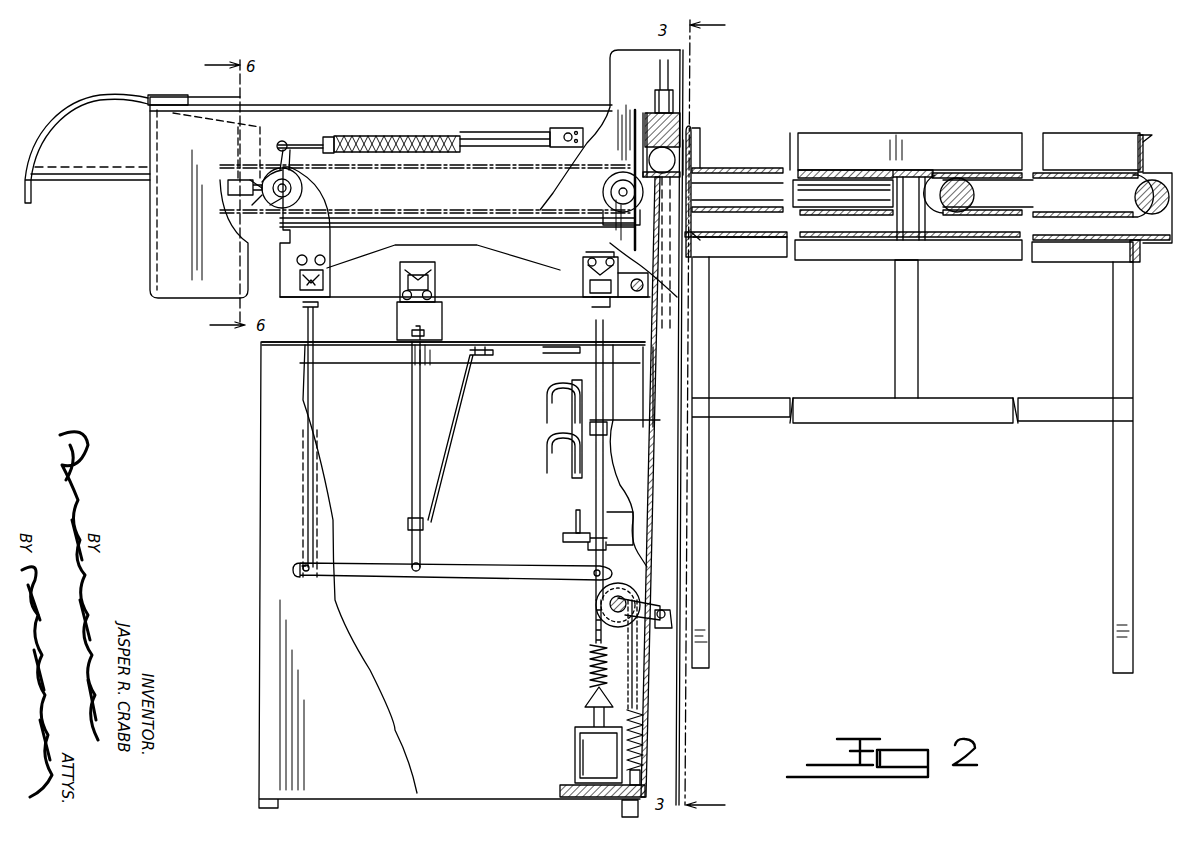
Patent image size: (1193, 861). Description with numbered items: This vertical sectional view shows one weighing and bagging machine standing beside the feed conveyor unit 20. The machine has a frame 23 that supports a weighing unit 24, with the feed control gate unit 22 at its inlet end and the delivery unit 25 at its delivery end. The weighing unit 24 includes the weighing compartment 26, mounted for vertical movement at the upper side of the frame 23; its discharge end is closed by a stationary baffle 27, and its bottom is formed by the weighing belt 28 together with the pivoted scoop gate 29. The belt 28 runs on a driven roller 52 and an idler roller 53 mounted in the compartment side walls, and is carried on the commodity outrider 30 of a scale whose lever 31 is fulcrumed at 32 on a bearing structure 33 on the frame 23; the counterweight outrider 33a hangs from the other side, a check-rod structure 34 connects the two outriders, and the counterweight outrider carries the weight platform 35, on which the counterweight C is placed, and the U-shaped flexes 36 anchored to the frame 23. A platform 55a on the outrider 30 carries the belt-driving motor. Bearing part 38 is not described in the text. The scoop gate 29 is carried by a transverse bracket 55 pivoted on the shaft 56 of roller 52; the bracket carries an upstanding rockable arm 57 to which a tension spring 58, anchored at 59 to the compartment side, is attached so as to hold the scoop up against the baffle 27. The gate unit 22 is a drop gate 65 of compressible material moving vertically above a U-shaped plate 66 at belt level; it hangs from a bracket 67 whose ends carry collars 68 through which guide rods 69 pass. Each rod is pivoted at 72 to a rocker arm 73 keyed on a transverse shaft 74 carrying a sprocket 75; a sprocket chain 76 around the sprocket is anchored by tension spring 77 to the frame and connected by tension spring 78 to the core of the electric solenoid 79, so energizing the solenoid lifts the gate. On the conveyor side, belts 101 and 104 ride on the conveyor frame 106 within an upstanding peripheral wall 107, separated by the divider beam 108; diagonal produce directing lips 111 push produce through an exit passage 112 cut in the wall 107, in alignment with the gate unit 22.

The conveyor unit 20 is at (866, 104).
The feed control gate unit 22 is at (706, 90).
The frame 23 is at (222, 386).
The weighing unit 24 is at (388, 66).
The delivery unit 25 is at (66, 90).
The weighing compartment 26 is at (262, 105).
The baffle 27 is at (165, 120).
The weighing belt 28 is at (572, 222).
The scoop gate 29 is at (150, 99).
The commodity outrider 30 is at (330, 232).
The weighing lever 31 is at (515, 297).
The fulcrum 32 is at (400, 290).
The bearing structure 33 is at (432, 312).
The counterweight outrider 33a is at (583, 262).
The check-rod structure 34 is at (500, 564).
The weight platform 35 is at (563, 540).
The flexes 36 is at (634, 292).
The U-bolt clamps 38 is at (548, 405).
The driven roller 52 is at (300, 185).
The idler roller 53 is at (606, 190).
The transverse bracket 55 is at (236, 185).
The platform 55a is at (398, 228).
The shaft 56 is at (275, 205).
The rockable arm 57 is at (308, 146).
The tension spring 58 is at (368, 136).
The spring anchor 59 is at (560, 128).
The drop gate 65 is at (650, 108).
The U-shaped plate 66 is at (695, 172).
The bracket 67 is at (648, 105).
The collars 68 is at (664, 90).
The guide rods 69 is at (668, 330).
The pivot 72 is at (668, 606).
The rocker arm 73 is at (672, 620).
The transverse shaft 74 is at (596, 602).
The sprocket 75 is at (596, 621).
The sprocket chain 76 is at (640, 682).
The tension spring 77 is at (642, 730).
The tension spring 78 is at (592, 668).
The electric solenoid 79 is at (585, 730).
The belt 101 is at (855, 215).
The belt 104 is at (968, 178).
The conveyor frame 106 is at (918, 305).
The peripheral wall 107 is at (698, 150).
The divider beam 108 is at (915, 170).
The produce directing lips 111 is at (838, 160).
The exit passage 112 is at (692, 130).
The counterweight C is at (576, 520).